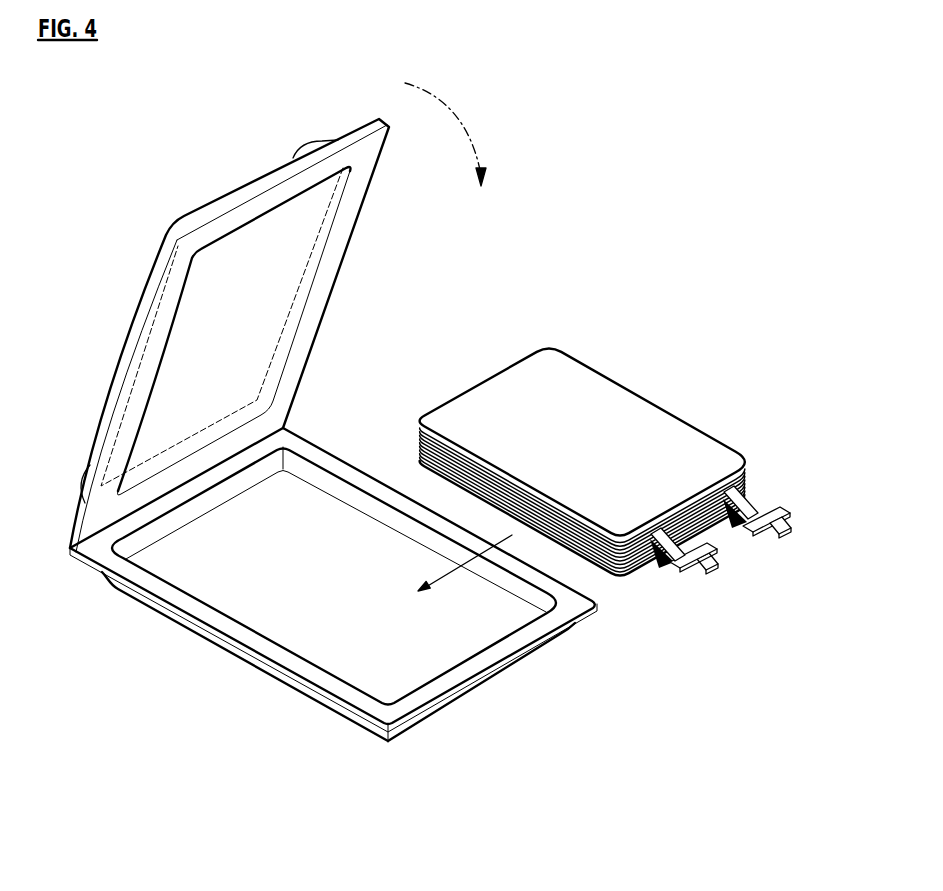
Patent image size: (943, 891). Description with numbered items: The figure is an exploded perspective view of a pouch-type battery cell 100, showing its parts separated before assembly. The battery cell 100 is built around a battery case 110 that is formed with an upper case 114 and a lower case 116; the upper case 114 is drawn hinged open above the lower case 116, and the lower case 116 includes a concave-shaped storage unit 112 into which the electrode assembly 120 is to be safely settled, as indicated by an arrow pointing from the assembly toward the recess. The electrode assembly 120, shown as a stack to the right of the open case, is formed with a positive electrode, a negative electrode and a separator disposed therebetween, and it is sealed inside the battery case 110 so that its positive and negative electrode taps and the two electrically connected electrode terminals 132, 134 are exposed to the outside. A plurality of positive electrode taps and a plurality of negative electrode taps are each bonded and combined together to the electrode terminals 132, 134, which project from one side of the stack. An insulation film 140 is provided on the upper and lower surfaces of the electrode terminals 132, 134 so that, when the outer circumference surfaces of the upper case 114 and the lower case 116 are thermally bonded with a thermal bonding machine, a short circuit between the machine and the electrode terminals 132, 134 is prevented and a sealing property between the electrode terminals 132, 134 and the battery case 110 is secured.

The battery cell 100 is at (113, 98).
The battery case 110 is at (94, 371).
The storage unit 112 is at (263, 273).
The upper case 114 is at (202, 216).
The lower case 116 is at (255, 648).
The electrode assembly 120 is at (656, 418).
The electrode terminal 132 is at (707, 553).
The electrode terminal 134 is at (789, 534).
The insulation film 140 is at (716, 567).